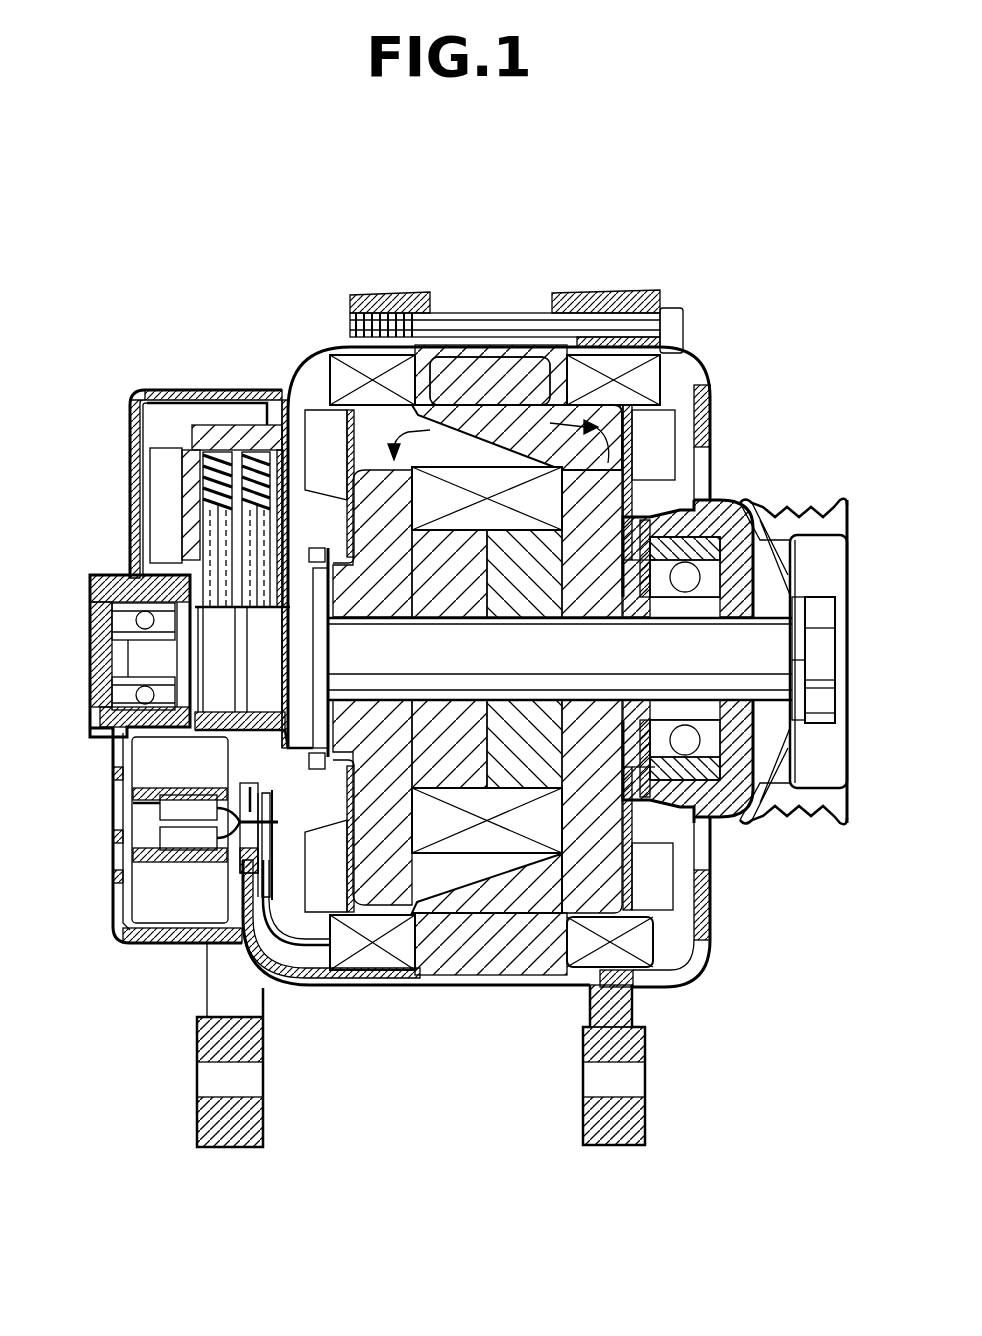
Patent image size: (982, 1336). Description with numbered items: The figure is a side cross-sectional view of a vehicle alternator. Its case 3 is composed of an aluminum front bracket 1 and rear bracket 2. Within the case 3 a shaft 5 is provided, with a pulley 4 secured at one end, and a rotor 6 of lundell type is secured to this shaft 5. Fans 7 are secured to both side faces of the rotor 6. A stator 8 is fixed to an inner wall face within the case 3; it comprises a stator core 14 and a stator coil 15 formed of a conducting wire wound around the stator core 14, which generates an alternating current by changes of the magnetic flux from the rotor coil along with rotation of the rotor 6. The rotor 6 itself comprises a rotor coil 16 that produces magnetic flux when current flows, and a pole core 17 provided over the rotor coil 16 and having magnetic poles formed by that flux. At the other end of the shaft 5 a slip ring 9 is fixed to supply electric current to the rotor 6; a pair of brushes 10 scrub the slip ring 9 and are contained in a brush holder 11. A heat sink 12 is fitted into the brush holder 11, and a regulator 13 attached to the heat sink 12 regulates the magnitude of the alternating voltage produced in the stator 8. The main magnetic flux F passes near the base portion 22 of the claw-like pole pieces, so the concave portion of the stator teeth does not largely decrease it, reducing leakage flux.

The front bracket 1 is at (705, 897).
The rear bracket 2 is at (152, 930).
The case 3 is at (680, 970).
The pulley 4 is at (817, 557).
The shaft 5 is at (763, 653).
The rotor 6 is at (477, 752).
The fans 7 is at (320, 425).
The stator 8 is at (506, 566).
The slip ring 9 is at (213, 662).
The brushes 10 is at (221, 510).
The brush holder 11 is at (256, 510).
The heat sink 12 is at (160, 480).
The regulator 13 is at (190, 455).
The stator core 14 is at (524, 365).
The stator coil 15 is at (612, 362).
The rotor coil 16 is at (461, 840).
The pole core 17 is at (510, 767).
The base portion of claw 22 is at (632, 386).
The main magnetic flux F is at (486, 358).